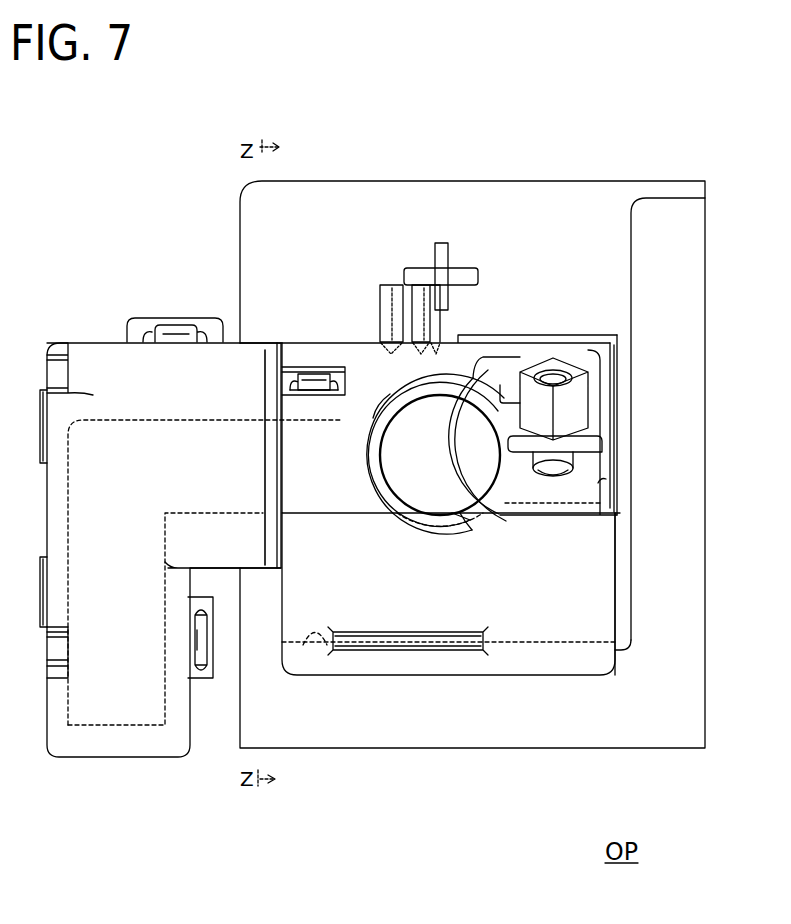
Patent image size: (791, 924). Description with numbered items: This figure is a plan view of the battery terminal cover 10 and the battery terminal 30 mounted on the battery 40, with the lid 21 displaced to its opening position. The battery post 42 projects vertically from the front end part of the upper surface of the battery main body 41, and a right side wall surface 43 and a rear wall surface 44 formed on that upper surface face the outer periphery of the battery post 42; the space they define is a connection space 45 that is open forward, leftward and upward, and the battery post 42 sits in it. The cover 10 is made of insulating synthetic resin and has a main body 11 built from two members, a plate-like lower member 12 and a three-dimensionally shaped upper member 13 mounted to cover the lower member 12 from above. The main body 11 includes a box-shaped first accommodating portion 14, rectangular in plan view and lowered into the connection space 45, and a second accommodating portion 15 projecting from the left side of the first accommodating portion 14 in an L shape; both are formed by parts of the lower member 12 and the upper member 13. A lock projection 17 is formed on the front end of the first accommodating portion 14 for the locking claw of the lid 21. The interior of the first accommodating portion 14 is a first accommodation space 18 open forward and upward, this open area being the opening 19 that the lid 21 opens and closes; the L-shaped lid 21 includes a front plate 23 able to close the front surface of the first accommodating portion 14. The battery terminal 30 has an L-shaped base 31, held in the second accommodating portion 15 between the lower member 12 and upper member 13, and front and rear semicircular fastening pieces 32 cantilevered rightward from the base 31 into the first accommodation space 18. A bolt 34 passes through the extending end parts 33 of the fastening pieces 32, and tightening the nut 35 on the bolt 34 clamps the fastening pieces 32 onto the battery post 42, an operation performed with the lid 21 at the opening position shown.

The battery terminal cover 10 is at (543, 280).
The main body 11 is at (617, 408).
The lower member 12 is at (318, 357).
The upper member 13 is at (118, 705).
The first accommodating portion 14 is at (493, 292).
The second accommodating portion 15 is at (155, 782).
The lock projection 17 is at (424, 307).
The first accommodation space 18 is at (373, 418).
The opening 19 is at (598, 483).
The lid 21 is at (613, 677).
The front plate 23 is at (500, 615).
The battery terminal 30 is at (120, 410).
The base 31 is at (152, 420).
The fastening pieces 32 is at (448, 392).
The extending end parts 33 is at (512, 413).
The bolt 34 is at (553, 475).
The nut 35 is at (578, 372).
The battery 40 is at (347, 125).
The battery main body 41 is at (240, 208).
The battery post 42 is at (420, 470).
The right side wall surface 43 is at (615, 566).
The rear wall surface 44 is at (325, 640).
The connection space 45 is at (282, 287).